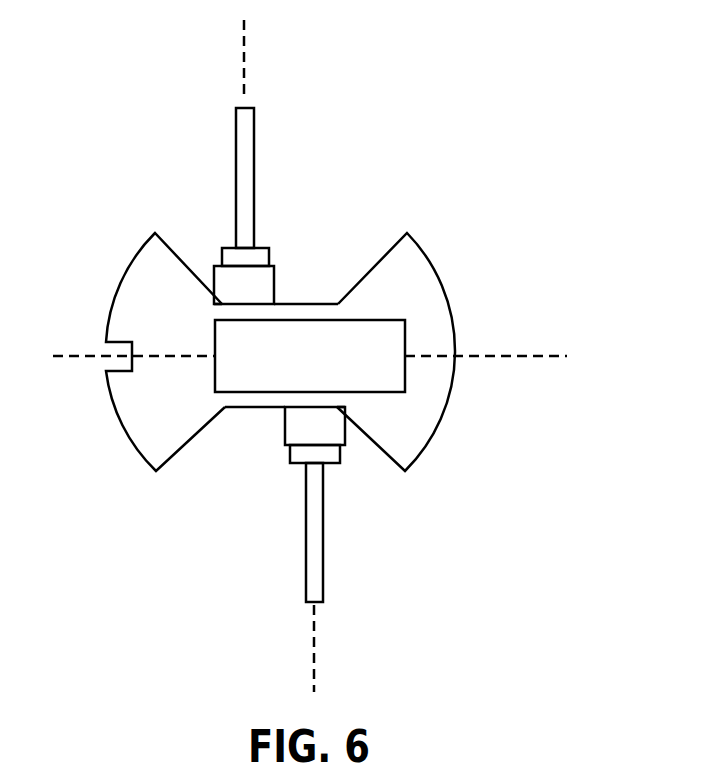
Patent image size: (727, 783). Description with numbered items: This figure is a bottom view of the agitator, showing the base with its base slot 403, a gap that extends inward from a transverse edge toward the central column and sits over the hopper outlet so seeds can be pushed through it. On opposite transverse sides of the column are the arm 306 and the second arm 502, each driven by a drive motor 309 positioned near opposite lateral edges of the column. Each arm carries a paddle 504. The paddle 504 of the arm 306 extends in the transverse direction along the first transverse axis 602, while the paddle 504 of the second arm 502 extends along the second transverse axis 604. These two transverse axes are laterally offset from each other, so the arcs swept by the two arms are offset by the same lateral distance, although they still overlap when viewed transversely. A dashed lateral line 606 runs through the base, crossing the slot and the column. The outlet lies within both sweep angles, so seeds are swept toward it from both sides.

The arm 306 is at (258, 257).
The drive motor 309 is at (265, 285).
The base slot 403 is at (183, 245).
The second arm 502 is at (332, 455).
The paddle 504 is at (254, 147).
The first transverse axis 602 is at (245, 57).
The second transverse axis 604 is at (317, 653).
The horizontal axis 606 is at (528, 355).